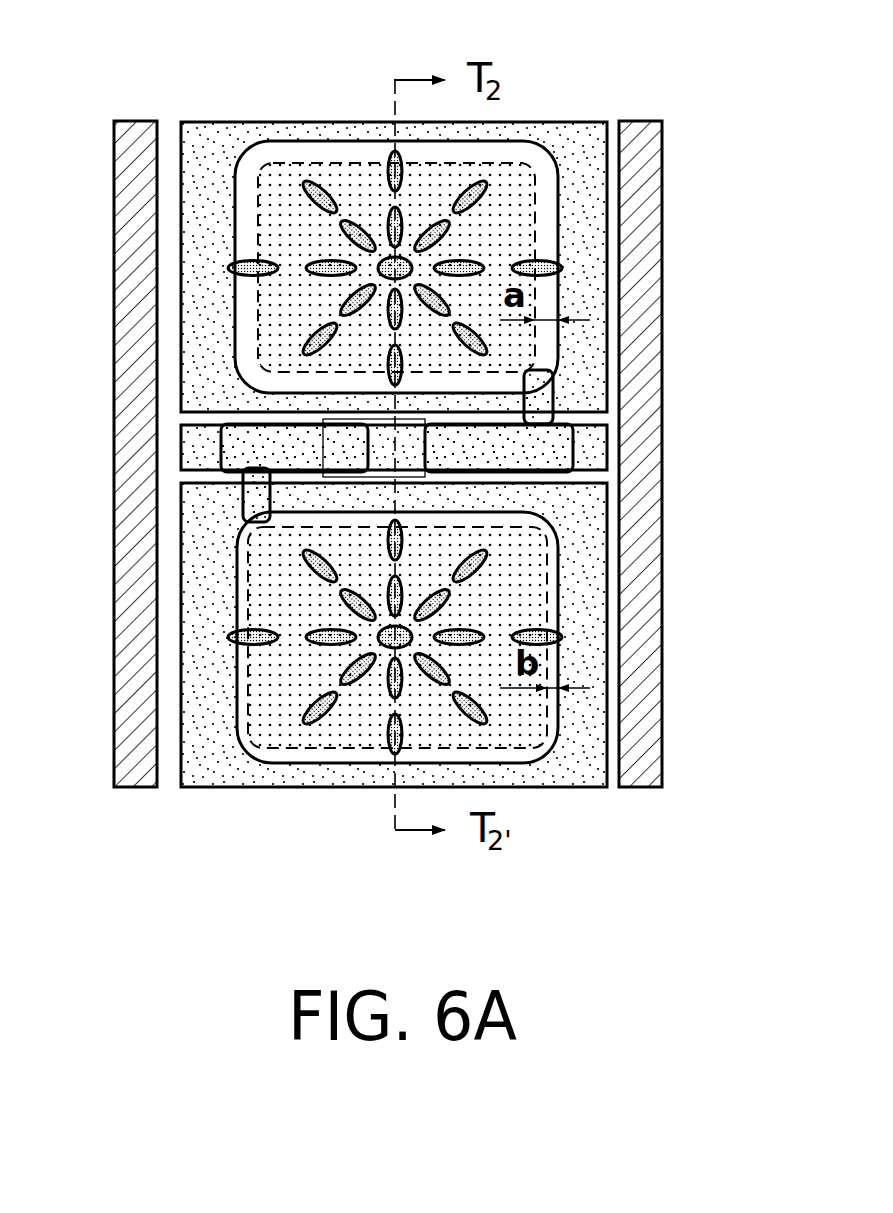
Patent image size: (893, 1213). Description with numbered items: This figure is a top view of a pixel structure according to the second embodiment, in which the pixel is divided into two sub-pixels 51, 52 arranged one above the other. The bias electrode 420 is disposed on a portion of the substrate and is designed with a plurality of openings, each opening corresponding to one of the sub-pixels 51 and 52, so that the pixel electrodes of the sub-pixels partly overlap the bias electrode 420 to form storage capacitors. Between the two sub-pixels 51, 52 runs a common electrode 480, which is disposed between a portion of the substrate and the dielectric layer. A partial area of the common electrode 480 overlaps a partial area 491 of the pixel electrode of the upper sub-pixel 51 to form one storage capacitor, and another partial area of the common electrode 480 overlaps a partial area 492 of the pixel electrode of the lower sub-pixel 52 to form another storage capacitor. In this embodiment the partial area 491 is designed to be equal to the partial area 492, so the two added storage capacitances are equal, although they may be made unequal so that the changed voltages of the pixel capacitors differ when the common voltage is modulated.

The bias electrode 420 is at (220, 122).
The sub-pixel 51 is at (512, 222).
The sub-pixel 52 is at (510, 582).
The common electrode 480 is at (596, 450).
The partial area 491 is at (561, 438).
The partial area 492 is at (233, 446).